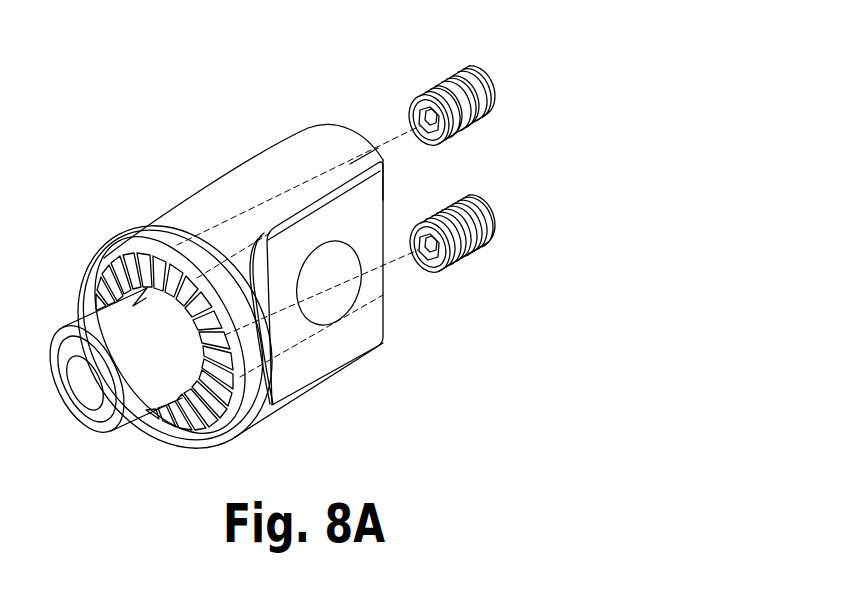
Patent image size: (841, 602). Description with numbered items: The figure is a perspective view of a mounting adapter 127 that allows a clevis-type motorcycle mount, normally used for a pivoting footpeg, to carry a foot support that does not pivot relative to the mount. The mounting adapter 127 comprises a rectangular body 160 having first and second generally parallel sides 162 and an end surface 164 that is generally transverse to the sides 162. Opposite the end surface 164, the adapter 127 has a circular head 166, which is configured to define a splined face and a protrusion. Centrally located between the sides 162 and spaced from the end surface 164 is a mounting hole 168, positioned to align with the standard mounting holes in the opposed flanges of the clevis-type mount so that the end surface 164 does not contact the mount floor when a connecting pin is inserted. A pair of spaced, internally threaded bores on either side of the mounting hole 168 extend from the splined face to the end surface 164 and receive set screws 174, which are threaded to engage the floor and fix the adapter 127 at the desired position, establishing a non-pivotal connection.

The mounting adapter 127 is at (138, 169).
The rectangular body 160 is at (305, 370).
The sides 162 is at (260, 168).
The end surface 164 is at (386, 200).
The circular head 166 is at (96, 257).
The mounting hole 168 is at (326, 301).
The set screws 174 is at (448, 73).